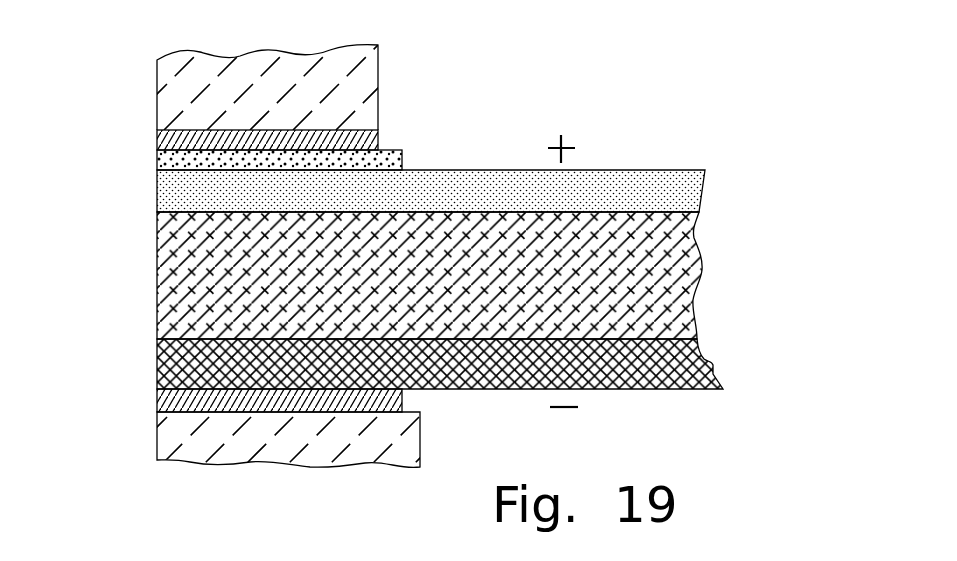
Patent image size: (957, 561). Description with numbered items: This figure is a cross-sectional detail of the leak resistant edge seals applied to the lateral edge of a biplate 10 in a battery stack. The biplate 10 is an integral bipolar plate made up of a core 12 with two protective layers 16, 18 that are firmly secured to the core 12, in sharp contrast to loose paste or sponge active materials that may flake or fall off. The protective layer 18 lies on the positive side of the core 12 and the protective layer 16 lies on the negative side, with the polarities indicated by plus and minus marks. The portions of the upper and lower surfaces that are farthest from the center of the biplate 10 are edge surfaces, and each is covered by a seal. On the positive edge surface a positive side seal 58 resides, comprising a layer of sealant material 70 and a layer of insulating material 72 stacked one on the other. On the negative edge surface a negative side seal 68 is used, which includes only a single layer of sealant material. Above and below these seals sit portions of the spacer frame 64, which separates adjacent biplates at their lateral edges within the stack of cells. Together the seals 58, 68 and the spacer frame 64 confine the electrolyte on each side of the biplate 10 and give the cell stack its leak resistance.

The biplate 10 is at (153, 170).
The core 12 is at (697, 282).
The protective layer 16 is at (652, 391).
The protective layer 18 is at (701, 200).
The positive side seal 58 is at (155, 130).
The spacer frame 64 is at (380, 82).
The negative side seal 68 is at (403, 400).
The layer of sealant material 70 is at (383, 138).
The layer of insulating material 72 is at (403, 163).